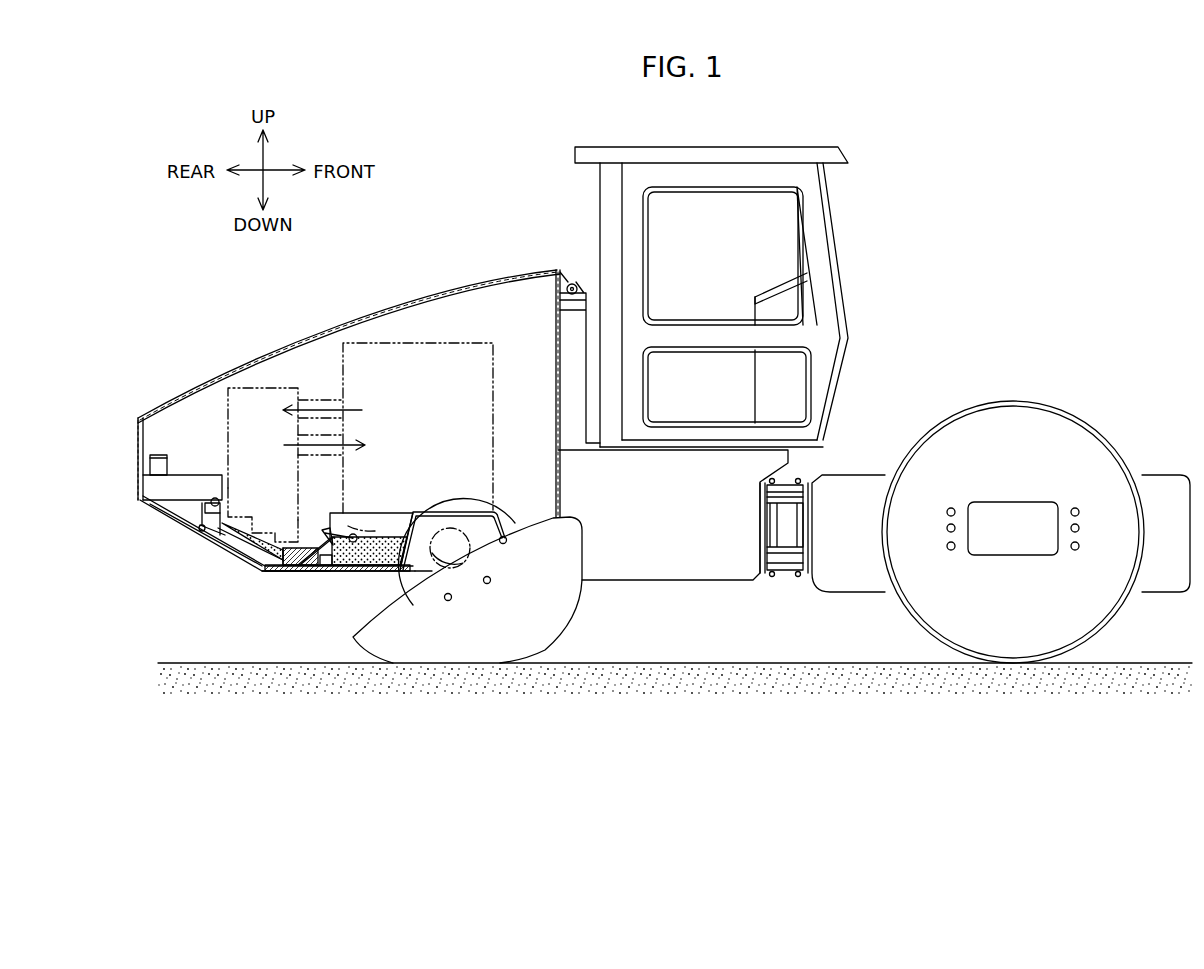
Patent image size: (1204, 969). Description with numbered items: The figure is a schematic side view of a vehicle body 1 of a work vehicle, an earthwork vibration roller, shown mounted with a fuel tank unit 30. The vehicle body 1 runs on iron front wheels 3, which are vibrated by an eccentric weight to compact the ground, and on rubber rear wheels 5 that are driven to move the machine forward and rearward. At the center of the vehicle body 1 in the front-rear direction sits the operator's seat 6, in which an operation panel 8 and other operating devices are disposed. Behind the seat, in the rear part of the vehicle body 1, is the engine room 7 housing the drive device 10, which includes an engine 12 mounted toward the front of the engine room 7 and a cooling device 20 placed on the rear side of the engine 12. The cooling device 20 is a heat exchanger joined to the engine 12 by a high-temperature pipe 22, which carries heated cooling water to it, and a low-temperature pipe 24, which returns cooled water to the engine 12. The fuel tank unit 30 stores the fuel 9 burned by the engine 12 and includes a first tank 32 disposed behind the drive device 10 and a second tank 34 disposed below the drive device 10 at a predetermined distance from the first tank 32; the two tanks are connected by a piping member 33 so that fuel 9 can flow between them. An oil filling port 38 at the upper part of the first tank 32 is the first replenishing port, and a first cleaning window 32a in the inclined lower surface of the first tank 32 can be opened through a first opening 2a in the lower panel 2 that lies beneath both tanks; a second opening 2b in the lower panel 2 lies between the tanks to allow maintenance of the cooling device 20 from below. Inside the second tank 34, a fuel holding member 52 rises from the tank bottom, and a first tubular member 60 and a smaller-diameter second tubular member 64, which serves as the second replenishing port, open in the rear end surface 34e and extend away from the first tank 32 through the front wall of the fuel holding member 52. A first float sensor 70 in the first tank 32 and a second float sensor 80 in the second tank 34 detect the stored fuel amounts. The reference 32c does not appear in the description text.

The vehicle body 1 is at (1018, 228).
The lower panel 2 is at (150, 512).
The first opening 2a is at (160, 500).
The second opening 2b is at (228, 562).
The front wheels 3 is at (1033, 414).
The rear wheels 5 is at (540, 615).
The operator's seat 6 is at (592, 214).
The engine room 7 is at (389, 293).
The operation panel 8 is at (757, 296).
The fuel 9 is at (396, 574).
The drive device 10 is at (514, 332).
The engine 12 is at (493, 420).
The cooling device 20 is at (267, 392).
The high-temperature pipe 22 is at (318, 401).
The low-temperature pipe 24 is at (320, 457).
The fuel tank unit 30 is at (210, 413).
The first tank 32 is at (212, 540).
The first cleaning window 32a is at (182, 525).
The guide plate passage 32c is at (242, 512).
The piping member 33 is at (268, 574).
The second tank 34 is at (360, 574).
The rear end surface 34e is at (290, 575).
The oil filling port 38 is at (160, 455).
The fuel holding member 52 is at (314, 574).
The first tubular member 60 is at (303, 545).
The second tubular member 64 is at (317, 551).
The first float sensor 70 is at (232, 499).
The second float sensor 80 is at (354, 526).